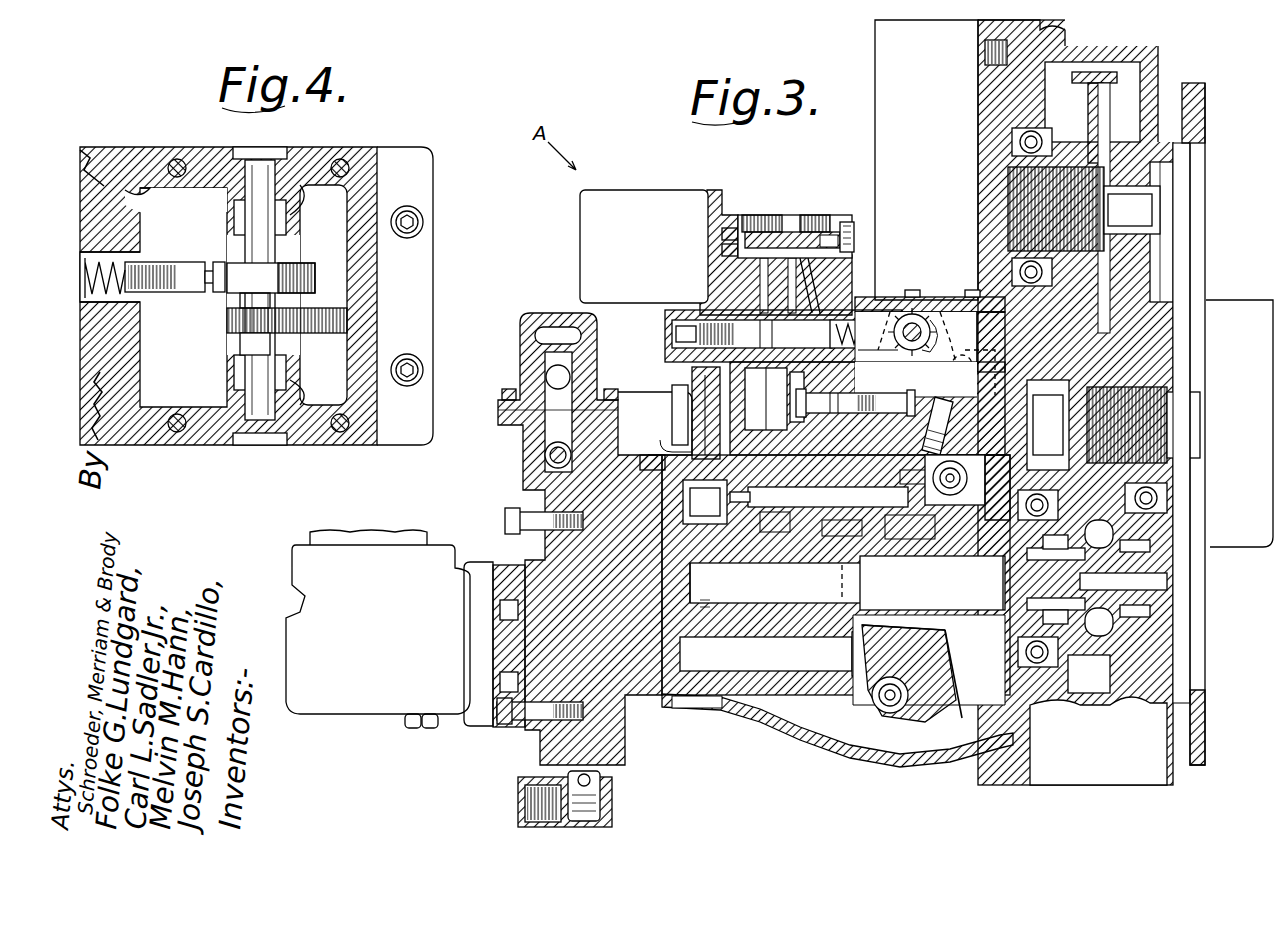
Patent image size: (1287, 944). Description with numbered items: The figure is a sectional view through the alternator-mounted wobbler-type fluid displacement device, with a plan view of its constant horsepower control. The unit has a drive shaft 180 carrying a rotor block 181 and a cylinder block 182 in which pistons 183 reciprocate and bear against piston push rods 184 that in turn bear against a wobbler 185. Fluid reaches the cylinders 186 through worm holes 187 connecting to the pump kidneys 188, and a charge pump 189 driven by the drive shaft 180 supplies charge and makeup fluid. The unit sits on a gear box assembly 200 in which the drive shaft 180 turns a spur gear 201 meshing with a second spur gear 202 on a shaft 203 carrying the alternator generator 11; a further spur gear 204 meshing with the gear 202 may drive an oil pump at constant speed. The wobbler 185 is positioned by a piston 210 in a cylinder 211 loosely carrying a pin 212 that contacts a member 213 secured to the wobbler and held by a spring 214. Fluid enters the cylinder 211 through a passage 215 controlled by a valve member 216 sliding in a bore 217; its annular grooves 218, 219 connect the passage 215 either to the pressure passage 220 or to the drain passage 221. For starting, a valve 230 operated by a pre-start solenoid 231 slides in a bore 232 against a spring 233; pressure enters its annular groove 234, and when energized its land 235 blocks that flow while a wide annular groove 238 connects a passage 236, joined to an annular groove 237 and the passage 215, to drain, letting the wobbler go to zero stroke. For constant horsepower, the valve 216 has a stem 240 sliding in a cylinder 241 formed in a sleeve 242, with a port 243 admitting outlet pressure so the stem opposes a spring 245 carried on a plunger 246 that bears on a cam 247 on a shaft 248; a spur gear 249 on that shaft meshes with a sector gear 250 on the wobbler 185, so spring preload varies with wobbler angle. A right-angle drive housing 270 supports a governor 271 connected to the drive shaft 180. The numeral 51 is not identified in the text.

In FIG. 3, the alternator generator 11 is at (1248, 279).
In FIG. 3, the passage 51 is at (712, 248).
In FIG. 3, the drive shaft 180 is at (937, 616).
In FIG. 3, the rotor block 181 is at (842, 497).
In FIG. 3, the cylinder block 182 is at (706, 452).
In FIG. 3, the pistons 183 is at (746, 486).
In FIG. 3, the piston push rods 184 is at (896, 503).
In FIG. 3, the wobbler 185 is at (952, 692).
In FIG. 3, the cylinders 186 is at (720, 690).
In FIG. 3, the worm holes 187 is at (666, 704).
In FIG. 3, the pump kidneys 188 is at (640, 742).
In FIG. 3, the charge pump 189 is at (540, 726).
In FIG. 3, the gear box assembly 200 is at (1225, 128).
In FIG. 3, the spur gear 201 is at (1095, 662).
In FIG. 3, the second spur gear 202 is at (1048, 425).
In FIG. 3, the shaft 203 is at (1090, 425).
In FIG. 3, the spur gear 204 is at (1088, 66).
In FIG. 3, the piston 210 is at (798, 474).
In FIG. 3, the cylinder 211 is at (796, 452).
In FIG. 3, the pin 212 is at (866, 416).
In FIG. 3, the member 213 is at (916, 432).
In FIG. 3, the spring 214 is at (891, 463).
In FIG. 3, the passage 215 is at (775, 408).
In FIG. 3, the valve member 216 is at (698, 398).
In FIG. 3, the bore 217 is at (712, 417).
In FIG. 3, the annular groove 218 is at (836, 345).
In FIG. 3, the annular groove 219 is at (817, 285).
In FIG. 3, the pressure passage 220 is at (876, 296).
In FIG. 3, the drain passage 221 is at (747, 260).
In FIG. 3, the valve 230 is at (786, 214).
In FIG. 3, the pre-start solenoid 231 is at (652, 197).
In FIG. 3, the bore 232 is at (840, 220).
In FIG. 3, the spring 233 is at (862, 262).
In FIG. 3, the annular groove 234 is at (806, 214).
In FIG. 3, the land 235 is at (732, 286).
In FIG. 3, the passage 236 is at (706, 301).
In FIG. 3, the annular groove 237 is at (772, 399).
In FIG. 3, the annular groove 238 is at (720, 208).
In FIG. 3, the stem 240 is at (693, 384).
In FIG. 3, the cylinder 241 is at (679, 364).
In FIG. 3, the sleeve 242 is at (672, 328).
In FIG. 3, the port 243 is at (700, 340).
In FIG. 4, the spring 245 is at (142, 232).
In FIG. 3, the spring 245 is at (892, 296).
In FIG. 4, the plunger 246 is at (190, 258).
In FIG. 3, the plunger 246 is at (878, 370).
In FIG. 4, the cam 247 is at (268, 270).
In FIG. 3, the cam 247 is at (926, 326).
In FIG. 4, the shaft 248 is at (243, 342).
In FIG. 3, the shaft 248 is at (922, 310).
In FIG. 4, the spur gear 249 is at (226, 320).
In FIG. 4, the sector gear 250 is at (326, 334).
In FIG. 3, the sector gear 250 is at (954, 372).
In FIG. 3, the right-angle drive housing 270 is at (288, 722).
In FIG. 3, the governor 271 is at (310, 539).